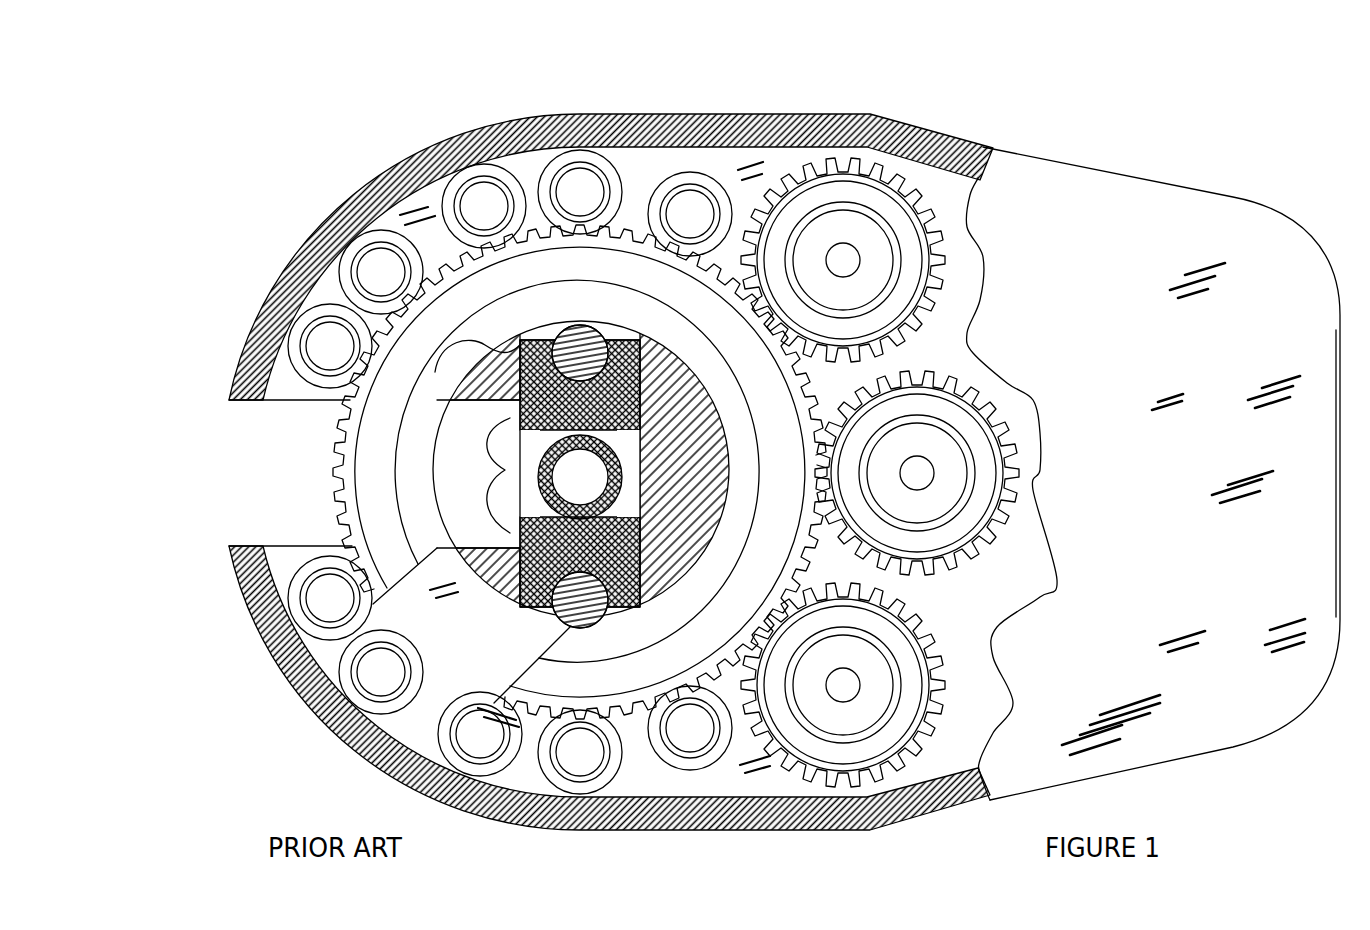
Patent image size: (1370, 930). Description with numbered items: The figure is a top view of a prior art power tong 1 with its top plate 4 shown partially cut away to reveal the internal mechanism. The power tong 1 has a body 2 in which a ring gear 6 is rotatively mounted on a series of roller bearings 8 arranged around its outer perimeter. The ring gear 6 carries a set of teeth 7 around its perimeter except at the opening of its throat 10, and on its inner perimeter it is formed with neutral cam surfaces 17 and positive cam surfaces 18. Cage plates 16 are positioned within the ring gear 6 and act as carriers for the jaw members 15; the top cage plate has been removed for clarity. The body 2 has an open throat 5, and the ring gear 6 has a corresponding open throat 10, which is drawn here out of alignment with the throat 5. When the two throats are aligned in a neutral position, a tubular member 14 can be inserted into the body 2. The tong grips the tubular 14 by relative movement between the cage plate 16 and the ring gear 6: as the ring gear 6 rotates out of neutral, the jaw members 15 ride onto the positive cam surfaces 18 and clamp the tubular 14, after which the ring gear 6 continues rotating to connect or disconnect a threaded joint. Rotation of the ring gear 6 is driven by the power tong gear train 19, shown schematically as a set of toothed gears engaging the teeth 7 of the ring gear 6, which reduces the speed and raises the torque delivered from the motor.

The power tong 1 is at (611, 432).
The body 2 is at (665, 113).
The top plate 4 is at (1153, 227).
The open throat 5 is at (277, 480).
The ring gear 6 is at (580, 472).
The teeth 7 is at (747, 277).
The roller bearings 8 is at (582, 172).
The open throat 10 is at (457, 647).
The tubular member 14 is at (572, 458).
The jaw members 15 is at (503, 470).
The cage plates 16 is at (683, 354).
The neutral cam surfaces 17 is at (438, 368).
The positive cam surfaces 18 is at (575, 340).
The power tong gear train 19 is at (945, 667).